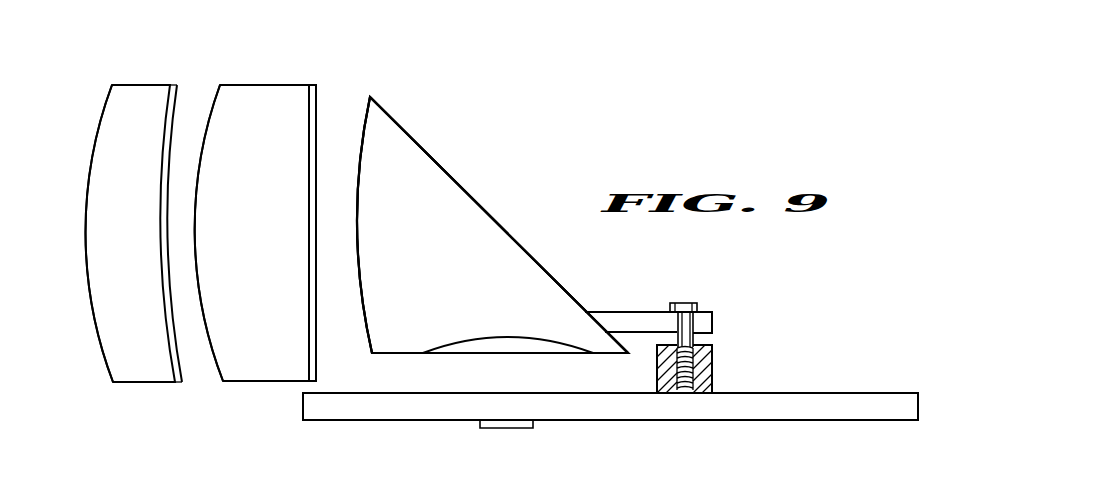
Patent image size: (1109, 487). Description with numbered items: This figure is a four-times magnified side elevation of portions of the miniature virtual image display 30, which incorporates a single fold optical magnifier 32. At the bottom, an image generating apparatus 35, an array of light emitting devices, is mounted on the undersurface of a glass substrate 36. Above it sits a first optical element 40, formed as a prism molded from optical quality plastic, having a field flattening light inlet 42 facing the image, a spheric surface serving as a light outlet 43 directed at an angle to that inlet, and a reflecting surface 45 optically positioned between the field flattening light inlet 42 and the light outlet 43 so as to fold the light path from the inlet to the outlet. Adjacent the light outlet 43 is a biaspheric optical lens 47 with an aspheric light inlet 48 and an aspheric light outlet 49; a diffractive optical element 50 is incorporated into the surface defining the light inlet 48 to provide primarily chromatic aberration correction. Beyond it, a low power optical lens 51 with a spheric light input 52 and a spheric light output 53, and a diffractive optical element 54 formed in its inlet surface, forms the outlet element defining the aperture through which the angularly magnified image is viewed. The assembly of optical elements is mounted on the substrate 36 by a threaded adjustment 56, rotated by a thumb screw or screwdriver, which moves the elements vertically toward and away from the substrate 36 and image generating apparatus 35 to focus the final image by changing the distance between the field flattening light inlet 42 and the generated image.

The miniature virtual image display 30 is at (650, 253).
The single fold optical magnifier 32 is at (430, 113).
The image generating apparatus 35 is at (530, 430).
The glass substrate 36 is at (838, 391).
The first optical element 40 is at (425, 248).
The field flattening light inlet 42 is at (508, 337).
The light outlet 43 is at (366, 118).
The reflecting surface 45 is at (497, 223).
The optical lens 47 is at (262, 249).
The light inlet 48 is at (318, 365).
The light outlet 49 is at (212, 90).
The diffractive optical element 50 is at (315, 83).
The low power optical lens 51 is at (140, 249).
The light input 52 is at (178, 88).
The light output 53 is at (95, 150).
The diffractive optical element 54 is at (179, 383).
The threaded adjustment 56 is at (723, 299).